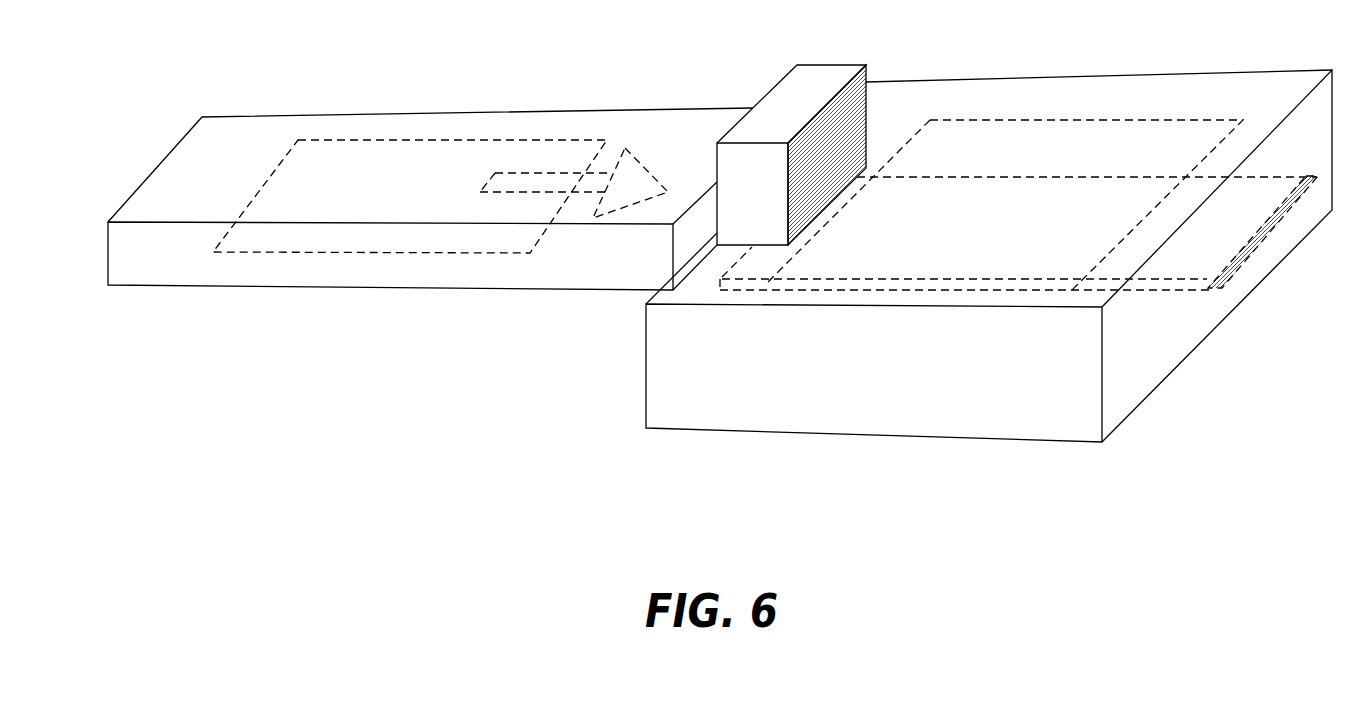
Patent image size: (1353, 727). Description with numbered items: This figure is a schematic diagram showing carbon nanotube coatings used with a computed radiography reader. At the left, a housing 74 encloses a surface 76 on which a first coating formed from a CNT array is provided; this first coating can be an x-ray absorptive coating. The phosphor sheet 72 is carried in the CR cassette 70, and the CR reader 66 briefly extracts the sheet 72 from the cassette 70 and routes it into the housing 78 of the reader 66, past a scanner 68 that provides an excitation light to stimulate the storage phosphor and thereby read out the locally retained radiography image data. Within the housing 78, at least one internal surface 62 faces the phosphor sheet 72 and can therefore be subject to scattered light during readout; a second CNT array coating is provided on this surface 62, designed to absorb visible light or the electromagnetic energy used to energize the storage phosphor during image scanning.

The internal surface 62 is at (1003, 120).
The CR reader 66 is at (812, 393).
The scanner 68 is at (759, 199).
The CR cassette 70 is at (388, 115).
The phosphor sheet 72 is at (1098, 238).
The housing 74 is at (210, 285).
The surface 76 is at (358, 252).
The housing 78 is at (1163, 72).